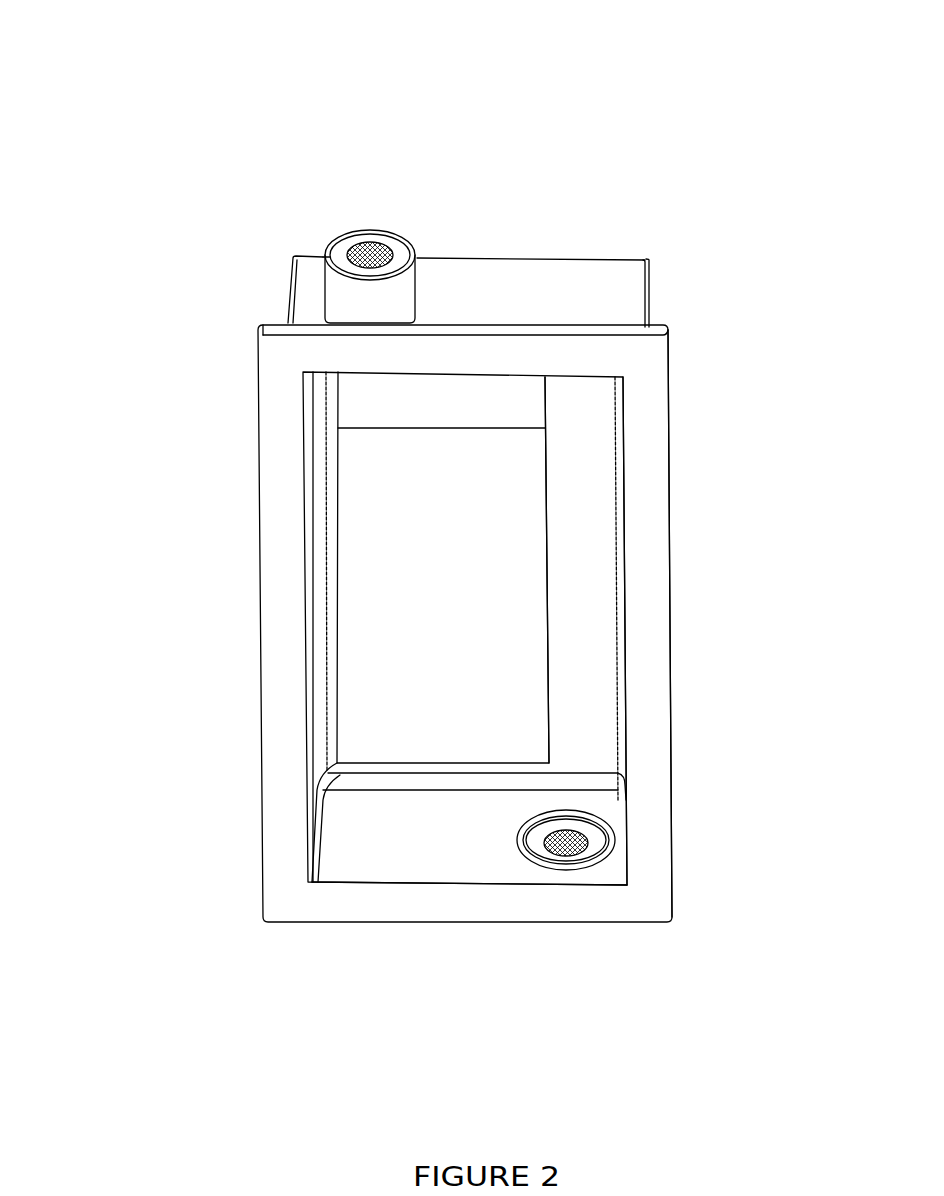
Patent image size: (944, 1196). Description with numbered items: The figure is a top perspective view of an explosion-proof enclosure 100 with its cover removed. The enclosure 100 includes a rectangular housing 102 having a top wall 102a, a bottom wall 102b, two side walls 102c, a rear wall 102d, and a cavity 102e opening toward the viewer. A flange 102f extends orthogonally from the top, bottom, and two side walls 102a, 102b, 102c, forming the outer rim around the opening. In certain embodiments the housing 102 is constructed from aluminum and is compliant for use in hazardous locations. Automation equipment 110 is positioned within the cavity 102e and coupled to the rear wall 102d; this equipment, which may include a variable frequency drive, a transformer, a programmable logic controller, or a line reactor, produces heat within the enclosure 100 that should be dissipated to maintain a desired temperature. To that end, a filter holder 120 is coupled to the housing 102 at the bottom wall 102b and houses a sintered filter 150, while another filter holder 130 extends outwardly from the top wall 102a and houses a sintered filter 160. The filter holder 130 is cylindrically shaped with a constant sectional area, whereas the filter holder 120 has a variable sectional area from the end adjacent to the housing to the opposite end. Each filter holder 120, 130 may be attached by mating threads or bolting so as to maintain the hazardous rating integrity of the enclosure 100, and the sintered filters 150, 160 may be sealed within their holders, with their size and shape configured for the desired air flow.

The explosion-proof enclosure 100 is at (178, 102).
The housing 102 is at (583, 287).
The top wall 102a is at (538, 306).
The bottom wall 102b is at (455, 848).
The side walls 102c is at (287, 300).
The rear wall 102d is at (590, 693).
The cavity 102e is at (360, 800).
The flange 102f is at (652, 493).
The automation equipment 110 is at (510, 648).
The filter holder 120 is at (592, 833).
The filter holder 130 is at (402, 292).
The sintered filter 150 is at (572, 850).
The sintered filter 160 is at (375, 250).